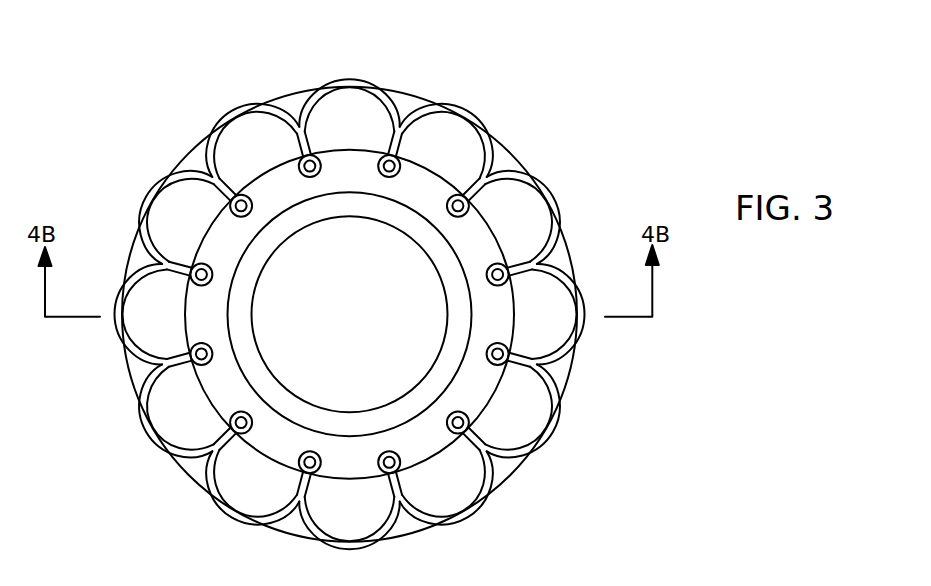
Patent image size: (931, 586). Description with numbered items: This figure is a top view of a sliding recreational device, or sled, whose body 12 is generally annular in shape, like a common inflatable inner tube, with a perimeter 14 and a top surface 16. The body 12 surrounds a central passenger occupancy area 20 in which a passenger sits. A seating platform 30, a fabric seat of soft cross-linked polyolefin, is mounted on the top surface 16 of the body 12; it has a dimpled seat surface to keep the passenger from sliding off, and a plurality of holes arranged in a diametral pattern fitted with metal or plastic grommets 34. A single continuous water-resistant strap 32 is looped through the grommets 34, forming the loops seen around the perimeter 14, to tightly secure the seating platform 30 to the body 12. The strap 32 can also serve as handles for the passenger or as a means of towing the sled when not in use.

The body 12 is at (500, 167).
The perimeter 14 is at (406, 95).
The top surface 16 is at (247, 160).
The passenger occupancy area 20 is at (338, 340).
The seating platform 30 is at (335, 178).
The strap 32 is at (146, 423).
The grommets 34 is at (195, 258).